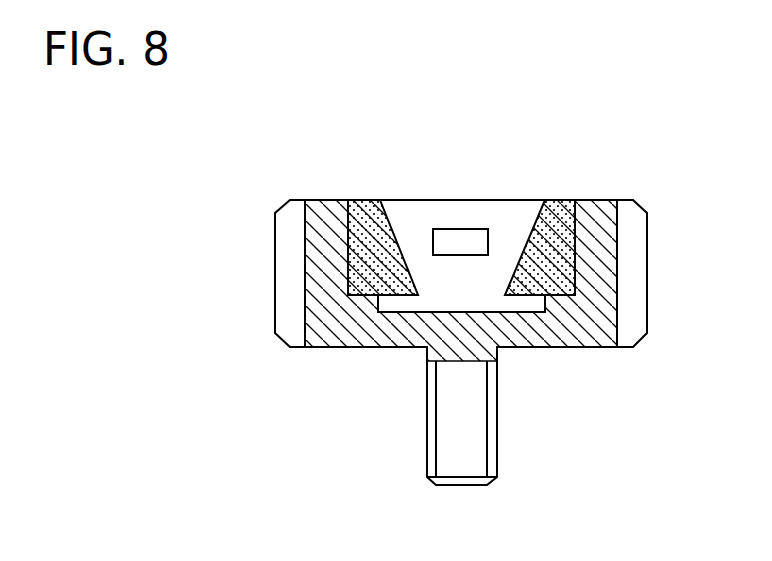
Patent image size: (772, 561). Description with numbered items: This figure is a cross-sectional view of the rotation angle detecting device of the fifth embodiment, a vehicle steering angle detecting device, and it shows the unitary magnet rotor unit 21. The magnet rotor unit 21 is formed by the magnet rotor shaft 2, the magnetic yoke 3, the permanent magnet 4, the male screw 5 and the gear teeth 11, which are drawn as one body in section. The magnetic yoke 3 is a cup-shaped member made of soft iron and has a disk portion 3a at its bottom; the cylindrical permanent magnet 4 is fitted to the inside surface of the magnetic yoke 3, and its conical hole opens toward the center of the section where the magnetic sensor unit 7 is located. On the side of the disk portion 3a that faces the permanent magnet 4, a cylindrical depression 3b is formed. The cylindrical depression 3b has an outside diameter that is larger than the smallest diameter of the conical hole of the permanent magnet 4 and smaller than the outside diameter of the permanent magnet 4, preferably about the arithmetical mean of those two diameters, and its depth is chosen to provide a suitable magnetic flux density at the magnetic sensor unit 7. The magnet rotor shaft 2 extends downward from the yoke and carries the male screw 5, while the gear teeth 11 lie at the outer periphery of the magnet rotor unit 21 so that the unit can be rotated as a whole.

The magnet rotor shaft 2 is at (452, 425).
The magnetic yoke 3 is at (328, 248).
The disk portion 3a is at (350, 337).
The cylindrical depression 3b is at (527, 303).
The permanent magnet 4 is at (553, 232).
The male screw 5 is at (498, 427).
The magnetic sensor unit 7 is at (452, 242).
The gear teeth 11 is at (648, 252).
The magnet rotor unit 21 is at (262, 315).